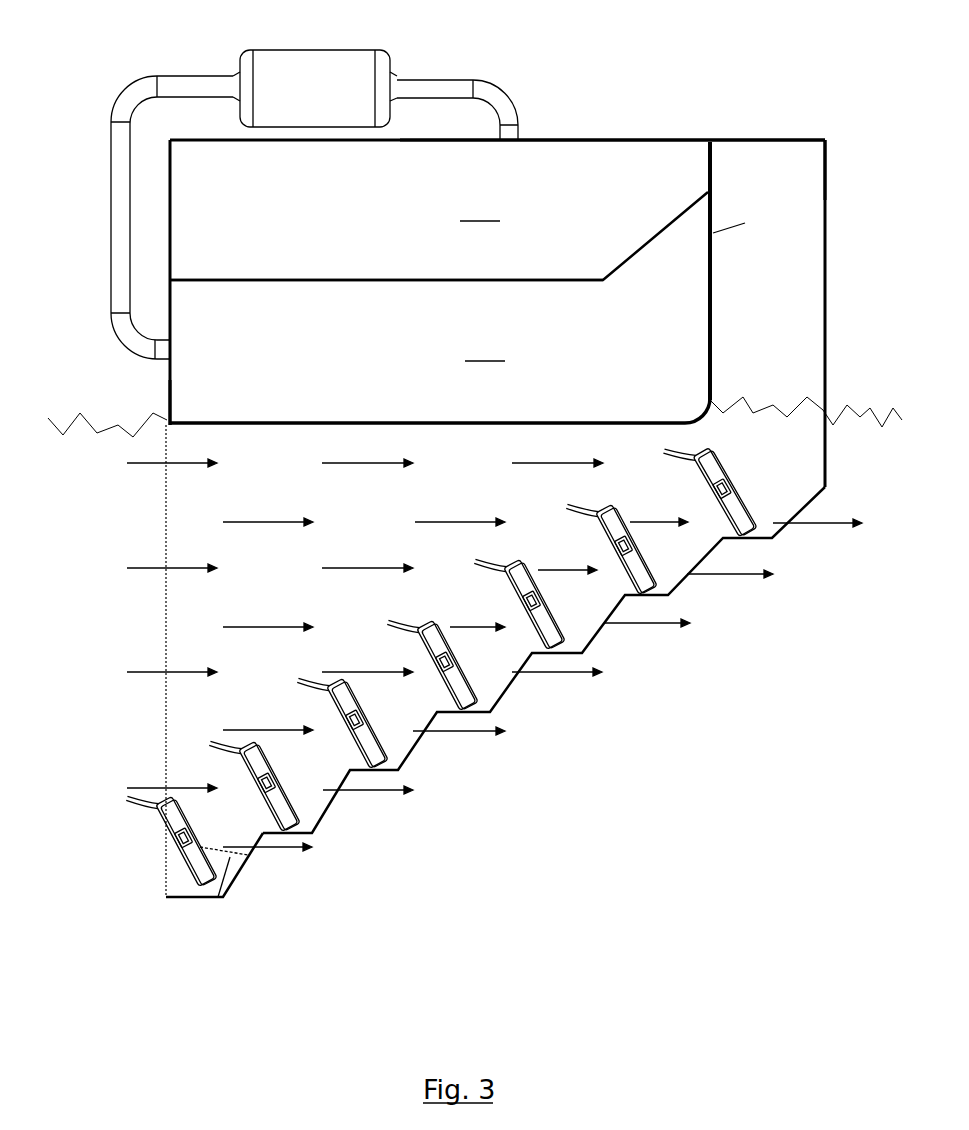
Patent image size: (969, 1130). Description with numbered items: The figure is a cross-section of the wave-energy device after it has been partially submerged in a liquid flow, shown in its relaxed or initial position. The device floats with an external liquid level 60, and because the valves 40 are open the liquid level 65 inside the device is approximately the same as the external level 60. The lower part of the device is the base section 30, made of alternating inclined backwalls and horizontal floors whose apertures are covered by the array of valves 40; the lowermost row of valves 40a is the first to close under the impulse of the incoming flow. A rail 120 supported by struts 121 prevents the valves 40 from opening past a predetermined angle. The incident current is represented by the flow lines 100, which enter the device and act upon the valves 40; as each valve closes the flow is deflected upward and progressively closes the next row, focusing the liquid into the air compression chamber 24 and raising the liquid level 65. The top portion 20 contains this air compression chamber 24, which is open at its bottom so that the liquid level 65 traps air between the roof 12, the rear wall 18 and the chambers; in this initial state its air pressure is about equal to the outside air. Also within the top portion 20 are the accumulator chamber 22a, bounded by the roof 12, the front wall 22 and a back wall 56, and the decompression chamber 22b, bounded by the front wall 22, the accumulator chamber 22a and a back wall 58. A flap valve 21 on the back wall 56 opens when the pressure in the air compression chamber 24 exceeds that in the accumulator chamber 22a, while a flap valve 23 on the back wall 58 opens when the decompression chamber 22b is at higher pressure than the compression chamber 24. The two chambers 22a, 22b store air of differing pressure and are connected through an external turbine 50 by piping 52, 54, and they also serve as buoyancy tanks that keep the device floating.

The roof 12 is at (768, 140).
The rear wall 18 is at (825, 213).
The top portion 20 is at (170, 204).
The flap valve 21 is at (705, 173).
The front wall 22 is at (170, 392).
The accumulator chamber 22a is at (439, 236).
The decompression chamber 22b is at (386, 336).
The flap valve 23 is at (737, 228).
The air compression chamber 24 is at (825, 160).
The base section 30 is at (667, 595).
The valve 40 is at (253, 767).
The lowermost row of valves 40a is at (160, 815).
The external turbine 50 is at (318, 57).
The piping 52 is at (445, 85).
The piping 54 is at (112, 147).
The back wall 56 is at (715, 148).
The back wall 58 is at (715, 333).
The liquid level 60 is at (80, 412).
The liquid level 65 is at (750, 402).
The flow lines 100 is at (170, 568).
The rail 120 is at (172, 840).
The struts 121 is at (230, 857).